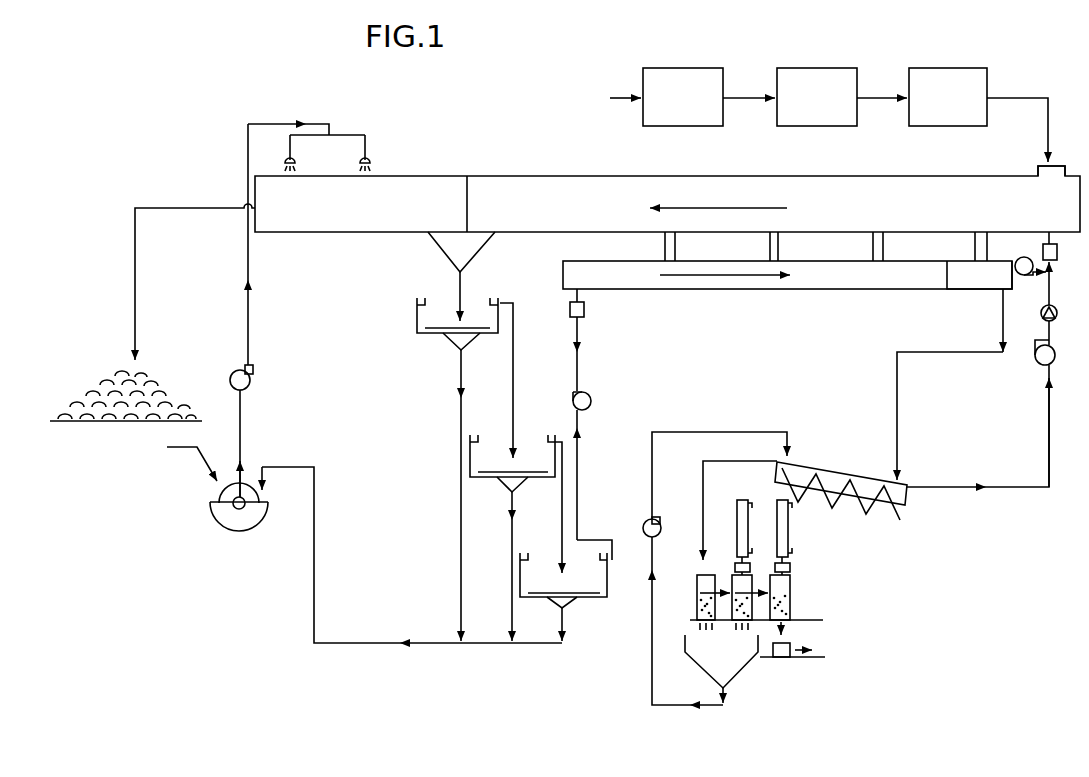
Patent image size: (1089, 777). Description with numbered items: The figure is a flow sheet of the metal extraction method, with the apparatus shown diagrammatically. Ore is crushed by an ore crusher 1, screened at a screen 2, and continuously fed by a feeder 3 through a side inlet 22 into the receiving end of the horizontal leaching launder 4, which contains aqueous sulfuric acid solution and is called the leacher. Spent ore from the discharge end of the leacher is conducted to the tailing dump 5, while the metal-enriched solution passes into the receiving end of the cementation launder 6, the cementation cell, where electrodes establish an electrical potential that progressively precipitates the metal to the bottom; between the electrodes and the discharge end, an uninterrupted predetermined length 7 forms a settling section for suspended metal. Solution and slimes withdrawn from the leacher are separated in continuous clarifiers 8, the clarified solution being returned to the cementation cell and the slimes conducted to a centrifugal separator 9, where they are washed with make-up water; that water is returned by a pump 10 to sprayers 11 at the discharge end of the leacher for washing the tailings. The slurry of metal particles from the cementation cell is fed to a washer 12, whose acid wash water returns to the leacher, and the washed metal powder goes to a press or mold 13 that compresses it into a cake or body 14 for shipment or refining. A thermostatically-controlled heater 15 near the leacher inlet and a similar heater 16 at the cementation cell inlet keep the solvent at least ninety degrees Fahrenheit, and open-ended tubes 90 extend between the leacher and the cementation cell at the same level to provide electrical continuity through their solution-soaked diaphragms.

The ore crusher 1 is at (716, 46).
The screen 2 is at (839, 66).
The feeder 3 is at (971, 66).
The leaching launder 4 is at (893, 174).
The tailing dump 5 is at (149, 371).
The cementation launder 6 is at (782, 292).
The predetermined length of the cell 7 is at (970, 290).
The clarifiers 8 is at (505, 571).
The centrifugal separator 9 is at (244, 539).
The pump 10 is at (253, 372).
The sprayers 11 is at (357, 162).
The washer 12 is at (827, 468).
The press or mold 13 is at (695, 582).
The cake or body 14 is at (790, 643).
The thermostatically-controlled heater 15 is at (1055, 252).
The heater 16 is at (584, 308).
The side inlet 22 is at (1040, 172).
The tubes 90 is at (873, 246).